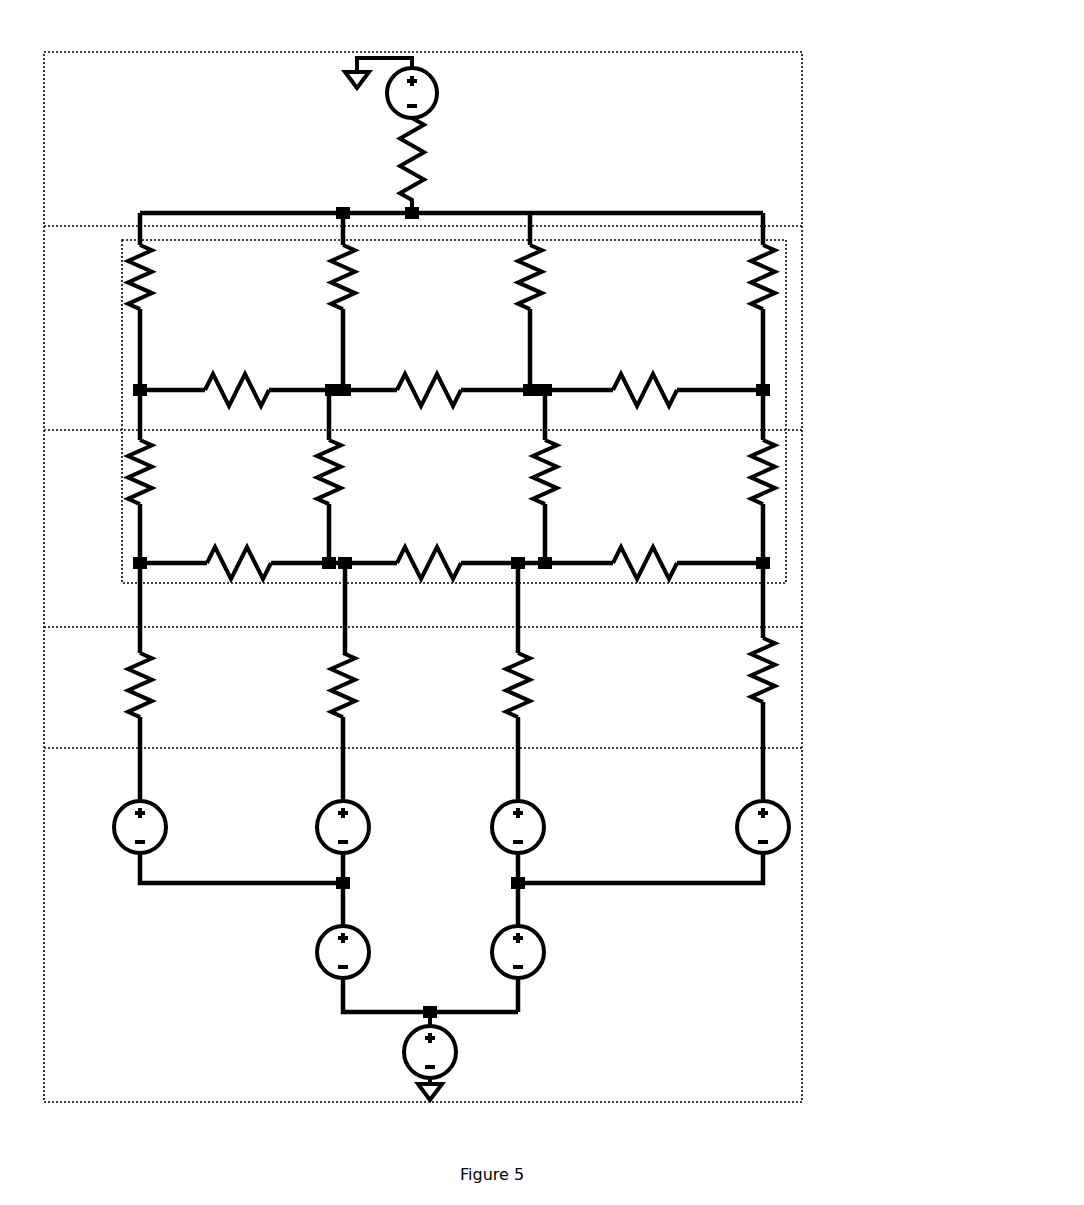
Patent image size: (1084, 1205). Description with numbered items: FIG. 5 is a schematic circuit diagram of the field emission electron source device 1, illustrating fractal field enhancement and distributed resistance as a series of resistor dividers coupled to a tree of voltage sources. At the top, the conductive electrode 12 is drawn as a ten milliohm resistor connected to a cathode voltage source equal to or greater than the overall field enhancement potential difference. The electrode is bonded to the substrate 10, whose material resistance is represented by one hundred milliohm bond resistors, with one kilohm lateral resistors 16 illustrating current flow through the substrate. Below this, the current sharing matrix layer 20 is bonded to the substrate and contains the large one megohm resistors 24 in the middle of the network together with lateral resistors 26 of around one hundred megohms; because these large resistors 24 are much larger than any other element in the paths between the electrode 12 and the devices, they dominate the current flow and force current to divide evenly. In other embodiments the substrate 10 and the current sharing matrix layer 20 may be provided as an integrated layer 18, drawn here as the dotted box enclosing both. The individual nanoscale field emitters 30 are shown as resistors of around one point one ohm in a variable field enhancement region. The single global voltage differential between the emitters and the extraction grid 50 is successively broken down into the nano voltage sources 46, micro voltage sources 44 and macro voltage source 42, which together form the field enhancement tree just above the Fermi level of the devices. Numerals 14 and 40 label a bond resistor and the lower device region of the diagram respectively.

The field emission electron source device 1 is at (120, 107).
The substrate 10 is at (803, 262).
The electrode 12 is at (803, 100).
The bond resistance Rbond2 14 is at (322, 284).
The lateral resistors 16 is at (448, 340).
The integrated layer 18 is at (122, 345).
The current sharing matrix layer 20 is at (803, 472).
The large resistors 24 is at (222, 440).
The lateral resistors 26 is at (425, 517).
The nanoscale field emitters 30 is at (803, 657).
The nanostructured field emission device region 40 is at (803, 926).
The macro voltage source 42 is at (547, 1048).
The micro voltage source 44 is at (613, 951).
The nano voltage source 46 is at (793, 835).
The extraction grid 50 is at (345, 1122).